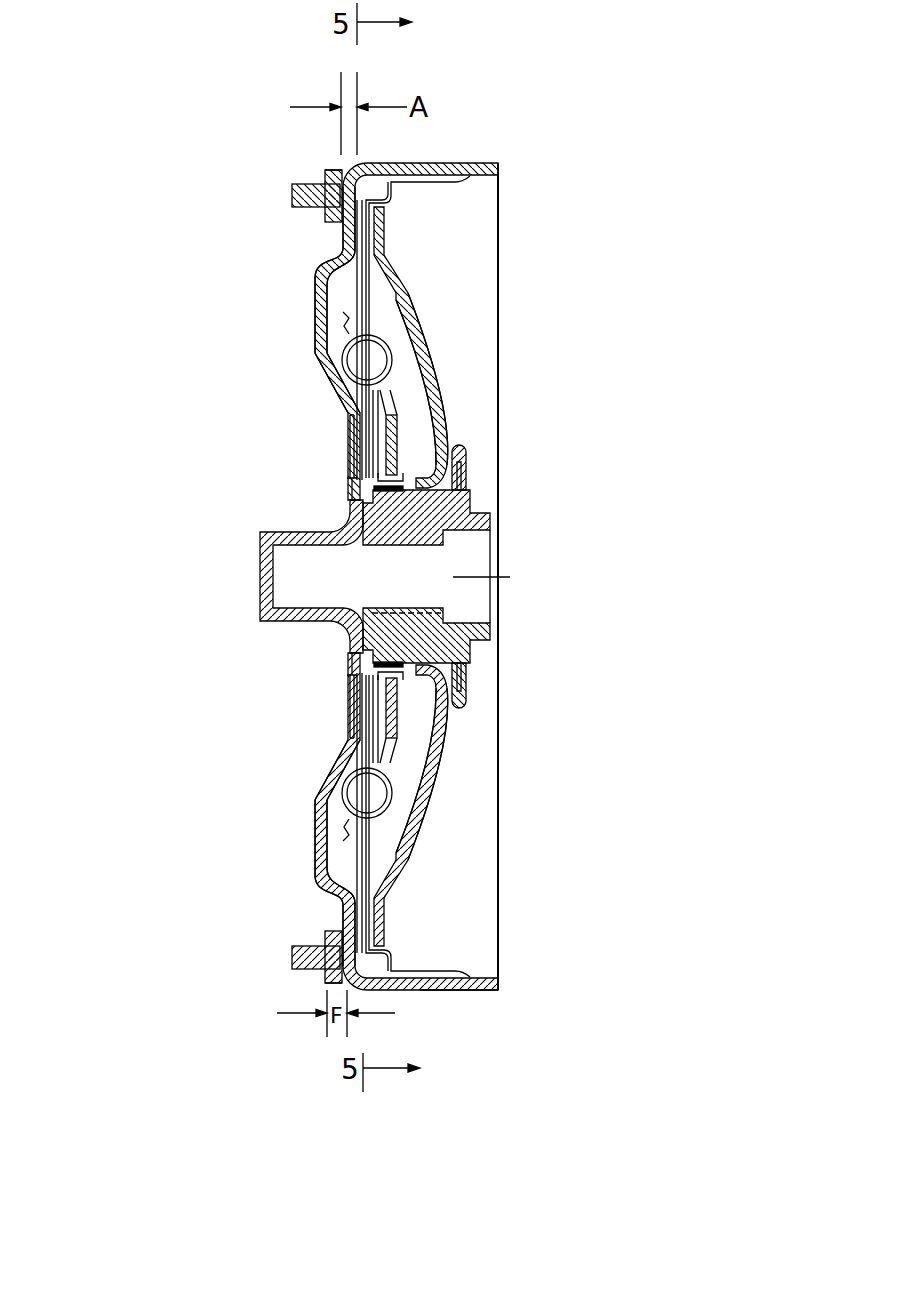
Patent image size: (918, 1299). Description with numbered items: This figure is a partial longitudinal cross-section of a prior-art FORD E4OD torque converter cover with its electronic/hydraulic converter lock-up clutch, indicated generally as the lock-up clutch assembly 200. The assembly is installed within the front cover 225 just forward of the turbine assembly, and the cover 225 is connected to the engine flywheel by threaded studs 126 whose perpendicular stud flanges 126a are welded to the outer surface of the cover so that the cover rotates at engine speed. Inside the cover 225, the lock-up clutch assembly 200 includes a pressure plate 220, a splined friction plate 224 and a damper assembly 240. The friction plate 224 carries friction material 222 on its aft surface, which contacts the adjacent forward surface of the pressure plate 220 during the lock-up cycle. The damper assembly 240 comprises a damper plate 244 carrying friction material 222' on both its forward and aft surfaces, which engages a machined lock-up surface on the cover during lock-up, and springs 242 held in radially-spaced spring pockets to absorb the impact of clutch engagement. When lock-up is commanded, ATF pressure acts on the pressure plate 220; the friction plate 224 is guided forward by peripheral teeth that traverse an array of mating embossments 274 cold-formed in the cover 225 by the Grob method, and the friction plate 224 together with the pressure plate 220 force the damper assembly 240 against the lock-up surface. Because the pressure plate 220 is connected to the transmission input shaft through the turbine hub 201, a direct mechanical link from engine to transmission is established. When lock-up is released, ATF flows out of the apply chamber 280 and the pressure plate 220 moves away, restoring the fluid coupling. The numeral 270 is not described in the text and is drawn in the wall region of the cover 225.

The lock-up clutch assembly 200 is at (630, 272).
The turbine hub 201 is at (473, 482).
The pressure plate 220 is at (410, 853).
The friction material 222 is at (420, 576).
The friction material 222' is at (362, 826).
The splined friction plate 224 is at (390, 192).
The front cover 225 is at (199, 589).
The damper assembly 240 is at (338, 298).
The springs 242 is at (405, 331).
The damper plate 244 is at (326, 862).
The housing wall portion 270 is at (317, 355).
The embossments 274 is at (450, 972).
The apply chamber 280 is at (422, 430).
The threaded studs 126 is at (293, 195).
The stud flanges 126a is at (320, 170).